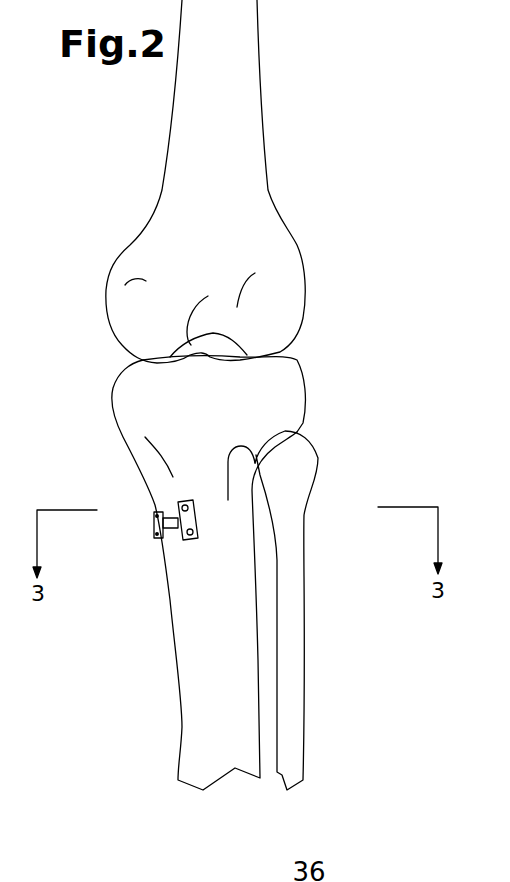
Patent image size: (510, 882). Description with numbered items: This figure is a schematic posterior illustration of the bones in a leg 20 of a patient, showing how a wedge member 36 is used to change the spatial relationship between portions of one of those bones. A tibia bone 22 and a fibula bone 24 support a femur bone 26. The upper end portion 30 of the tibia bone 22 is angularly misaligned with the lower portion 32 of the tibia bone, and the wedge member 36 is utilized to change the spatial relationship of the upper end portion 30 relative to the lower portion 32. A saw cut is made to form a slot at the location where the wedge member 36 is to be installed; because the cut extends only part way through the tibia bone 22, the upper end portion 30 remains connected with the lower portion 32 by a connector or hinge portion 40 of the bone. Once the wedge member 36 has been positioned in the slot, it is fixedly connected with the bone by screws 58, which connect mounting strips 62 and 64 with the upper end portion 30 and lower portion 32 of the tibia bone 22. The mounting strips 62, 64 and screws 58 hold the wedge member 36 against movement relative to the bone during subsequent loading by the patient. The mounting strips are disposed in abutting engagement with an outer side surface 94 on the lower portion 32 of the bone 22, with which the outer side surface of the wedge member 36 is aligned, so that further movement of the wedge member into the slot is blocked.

The leg 20 is at (356, 100).
The tibia bone 22 is at (172, 586).
The fibula bone 24 is at (292, 713).
The femur bone 26 is at (240, 167).
The upper end portion 30 is at (153, 392).
The lower portion 32 is at (217, 747).
The wedge member 36 is at (184, 542).
The connector or hinge portion 40 is at (198, 517).
The screws 58 is at (152, 516).
The mounting strip 62 is at (153, 526).
The mounting strip 64 is at (200, 522).
The outer side surface 94 is at (213, 686).